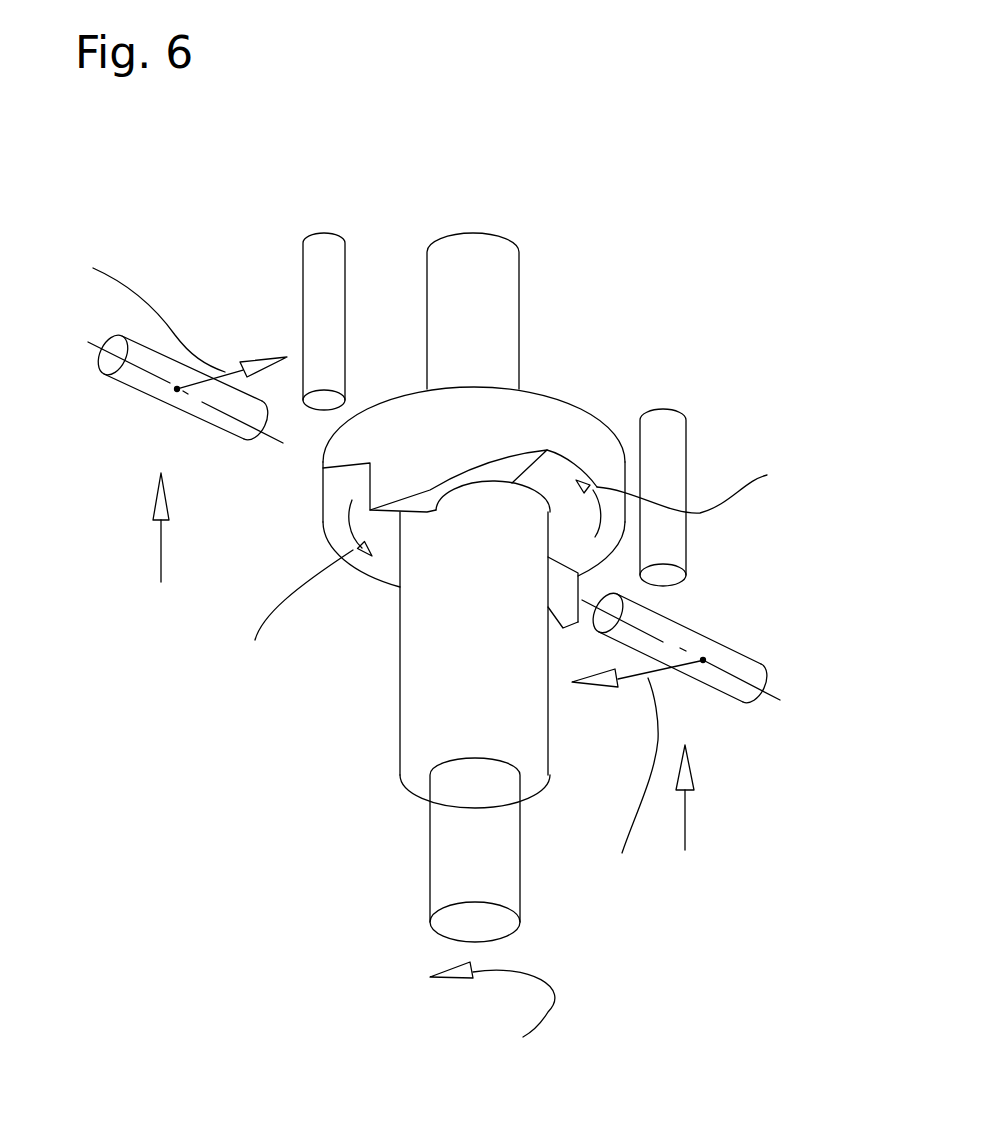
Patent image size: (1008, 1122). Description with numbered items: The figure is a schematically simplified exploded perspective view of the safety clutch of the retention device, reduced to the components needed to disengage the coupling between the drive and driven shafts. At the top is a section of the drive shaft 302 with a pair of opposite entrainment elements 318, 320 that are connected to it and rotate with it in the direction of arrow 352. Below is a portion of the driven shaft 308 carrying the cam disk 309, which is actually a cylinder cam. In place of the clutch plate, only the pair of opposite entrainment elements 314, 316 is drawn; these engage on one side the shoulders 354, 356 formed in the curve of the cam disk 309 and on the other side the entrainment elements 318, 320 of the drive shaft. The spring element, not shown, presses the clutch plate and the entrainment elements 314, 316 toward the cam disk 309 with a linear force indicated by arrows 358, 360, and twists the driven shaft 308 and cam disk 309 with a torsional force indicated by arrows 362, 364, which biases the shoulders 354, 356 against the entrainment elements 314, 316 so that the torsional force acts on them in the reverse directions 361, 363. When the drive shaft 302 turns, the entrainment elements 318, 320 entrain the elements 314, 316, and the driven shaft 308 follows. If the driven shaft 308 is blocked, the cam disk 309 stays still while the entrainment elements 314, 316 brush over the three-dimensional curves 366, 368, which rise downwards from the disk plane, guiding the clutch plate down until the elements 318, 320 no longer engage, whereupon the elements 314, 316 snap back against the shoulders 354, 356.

The drive shaft 302 is at (483, 267).
The driven shaft 308 is at (427, 708).
The cam disk 309 is at (493, 423).
The entrainment element 314 is at (720, 653).
The entrainment element 316 is at (155, 390).
The entrainment element 318 is at (667, 475).
The entrainment element 320 is at (318, 303).
The arrow 352 is at (440, 962).
The shoulder 354 is at (562, 582).
The shoulder 356 is at (323, 468).
The arrow 358 is at (692, 795).
The arrow 360 is at (155, 530).
The reverse direction 361 is at (228, 373).
The arrow 362 is at (353, 550).
The reverse direction 363 is at (645, 677).
The arrow 364 is at (597, 487).
The three-dimensional curve 366 is at (457, 477).
The three-dimensional curve 368 is at (549, 625).